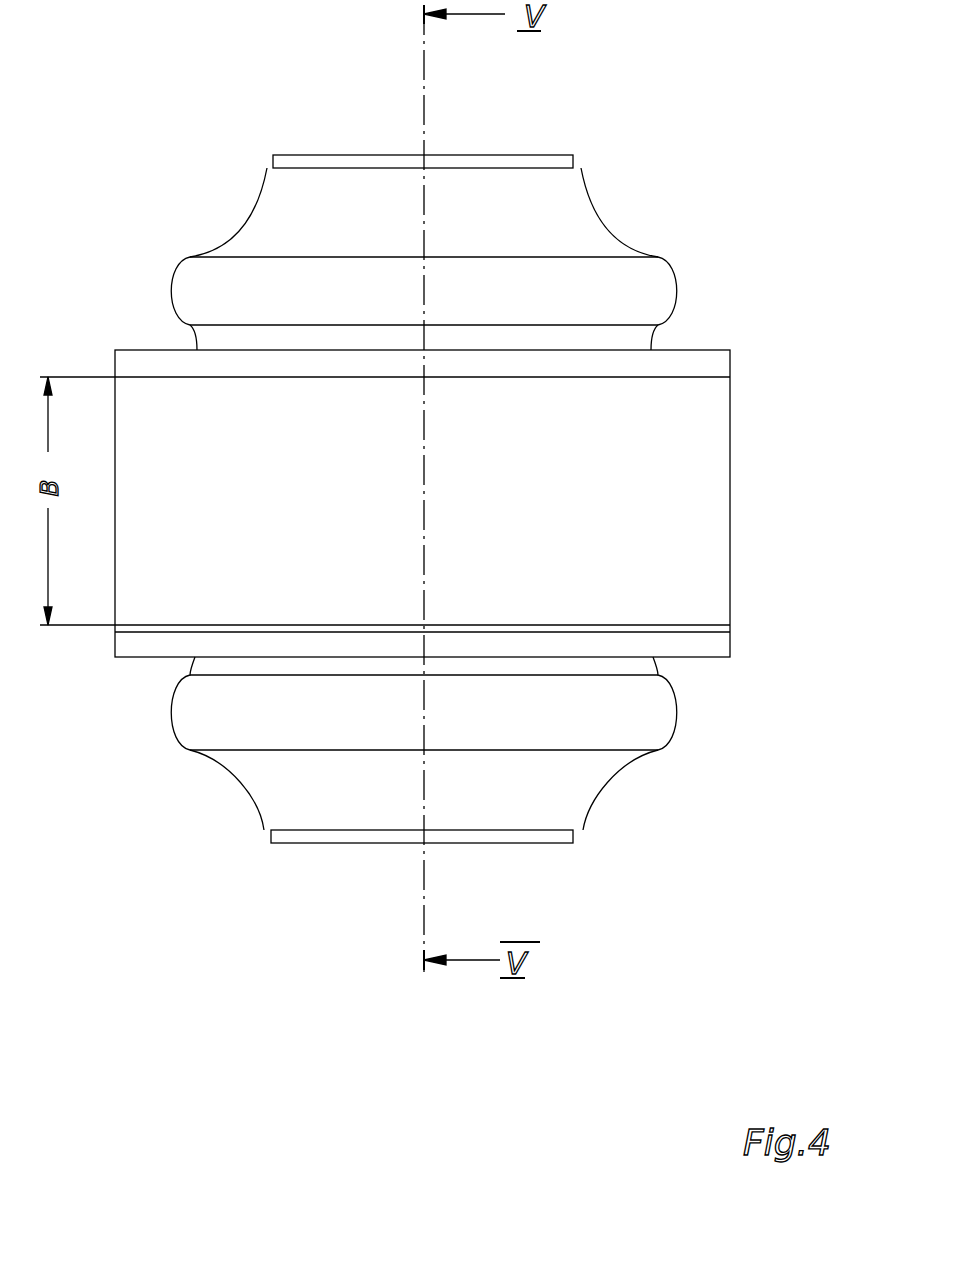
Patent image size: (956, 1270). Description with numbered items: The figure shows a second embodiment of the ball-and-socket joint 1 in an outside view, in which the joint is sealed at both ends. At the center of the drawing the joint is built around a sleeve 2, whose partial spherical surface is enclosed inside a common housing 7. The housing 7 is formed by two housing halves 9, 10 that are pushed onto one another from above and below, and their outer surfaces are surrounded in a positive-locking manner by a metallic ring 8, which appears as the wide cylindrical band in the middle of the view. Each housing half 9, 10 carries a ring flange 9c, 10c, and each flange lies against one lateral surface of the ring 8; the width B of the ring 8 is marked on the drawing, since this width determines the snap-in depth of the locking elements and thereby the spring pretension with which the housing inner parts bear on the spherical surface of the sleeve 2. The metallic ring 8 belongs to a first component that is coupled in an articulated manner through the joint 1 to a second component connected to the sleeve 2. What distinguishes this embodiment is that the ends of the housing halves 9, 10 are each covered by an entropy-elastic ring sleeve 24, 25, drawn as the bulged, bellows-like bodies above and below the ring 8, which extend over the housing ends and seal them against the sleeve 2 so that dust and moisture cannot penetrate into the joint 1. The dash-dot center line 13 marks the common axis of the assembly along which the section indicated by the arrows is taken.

The ball-and-socket joint 1 is at (210, 821).
The sleeve 2 is at (328, 835).
The housing 7 is at (681, 292).
The metallic ring 8 is at (713, 500).
The housing half 9 is at (642, 337).
The ring flange 9c is at (713, 367).
The housing half 10 is at (652, 667).
The ring flange 10c is at (720, 643).
The center axis 13 is at (425, 498).
The entropy-elastic ring sleeve 24 is at (612, 270).
The entropy-elastic ring sleeve 25 is at (653, 722).